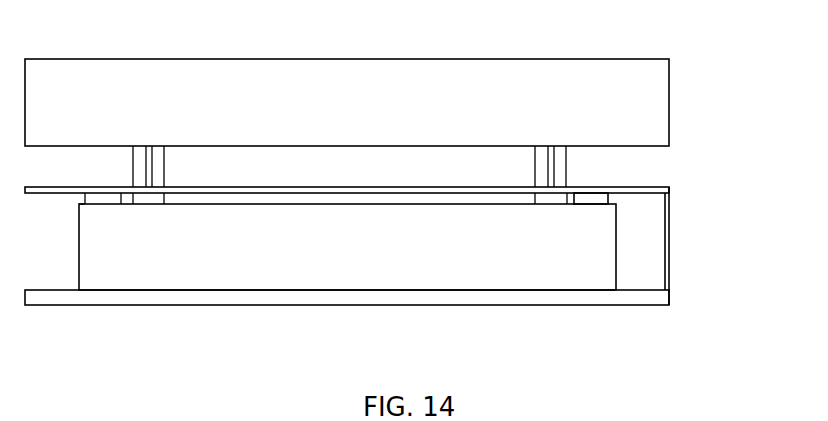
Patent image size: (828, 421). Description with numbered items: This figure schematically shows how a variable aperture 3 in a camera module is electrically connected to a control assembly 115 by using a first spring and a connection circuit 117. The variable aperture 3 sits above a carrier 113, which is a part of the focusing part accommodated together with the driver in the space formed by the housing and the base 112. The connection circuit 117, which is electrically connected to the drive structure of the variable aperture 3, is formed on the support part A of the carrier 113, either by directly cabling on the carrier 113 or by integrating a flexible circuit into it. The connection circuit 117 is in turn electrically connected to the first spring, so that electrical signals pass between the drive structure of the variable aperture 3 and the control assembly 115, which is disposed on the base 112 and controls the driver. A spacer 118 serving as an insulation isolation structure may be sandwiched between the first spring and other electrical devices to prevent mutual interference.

The variable aperture 3 is at (625, 83).
The connection circuit 117 is at (552, 165).
The support part A is at (558, 177).
The spacer 118 is at (597, 197).
The carrier 113 is at (574, 274).
The control assembly 115 is at (670, 257).
The base 112 is at (632, 297).